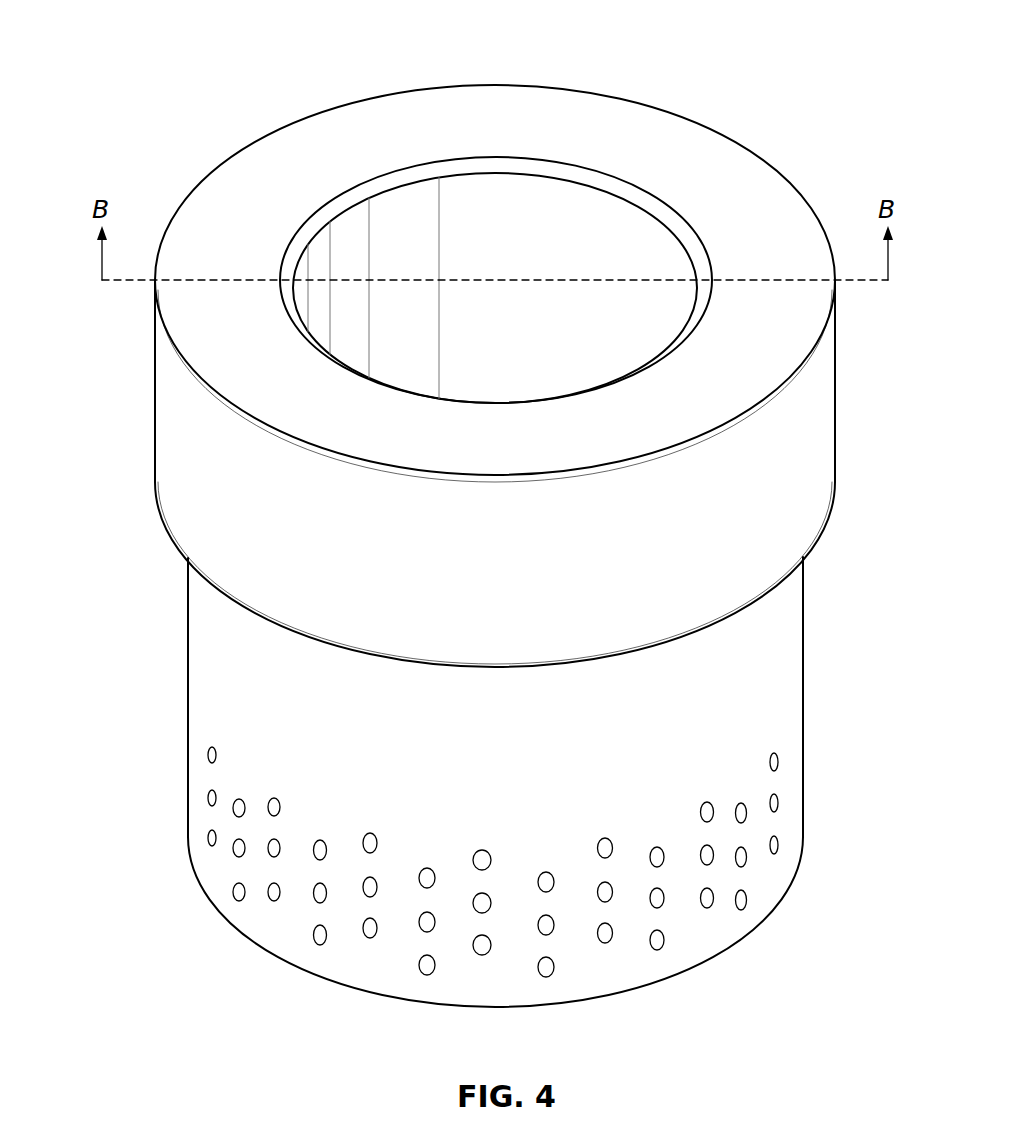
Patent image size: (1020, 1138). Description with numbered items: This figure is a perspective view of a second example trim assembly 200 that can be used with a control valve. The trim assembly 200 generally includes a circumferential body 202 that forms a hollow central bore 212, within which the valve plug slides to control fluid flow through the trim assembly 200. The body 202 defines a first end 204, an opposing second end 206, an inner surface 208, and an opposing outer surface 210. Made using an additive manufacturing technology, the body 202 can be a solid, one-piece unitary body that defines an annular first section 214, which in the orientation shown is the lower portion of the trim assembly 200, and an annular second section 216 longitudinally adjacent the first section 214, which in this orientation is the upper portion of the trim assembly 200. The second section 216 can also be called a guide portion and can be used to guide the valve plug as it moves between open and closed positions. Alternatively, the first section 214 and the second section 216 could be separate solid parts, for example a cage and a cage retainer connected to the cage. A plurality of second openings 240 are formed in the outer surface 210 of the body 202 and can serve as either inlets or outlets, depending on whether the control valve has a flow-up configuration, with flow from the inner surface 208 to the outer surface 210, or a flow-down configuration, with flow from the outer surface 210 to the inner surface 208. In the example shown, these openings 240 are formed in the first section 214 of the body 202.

The trim assembly 200 is at (134, 46).
The circumferential body 202 is at (644, 120).
The first end 204 is at (410, 92).
The second end 206 is at (436, 1012).
The inner surface 208 is at (347, 236).
The outer surface 210 is at (782, 686).
The hollow central bore 212 is at (522, 255).
The annular first section 214 is at (812, 803).
The annular second section 216 is at (812, 556).
The second openings 240 is at (370, 834).